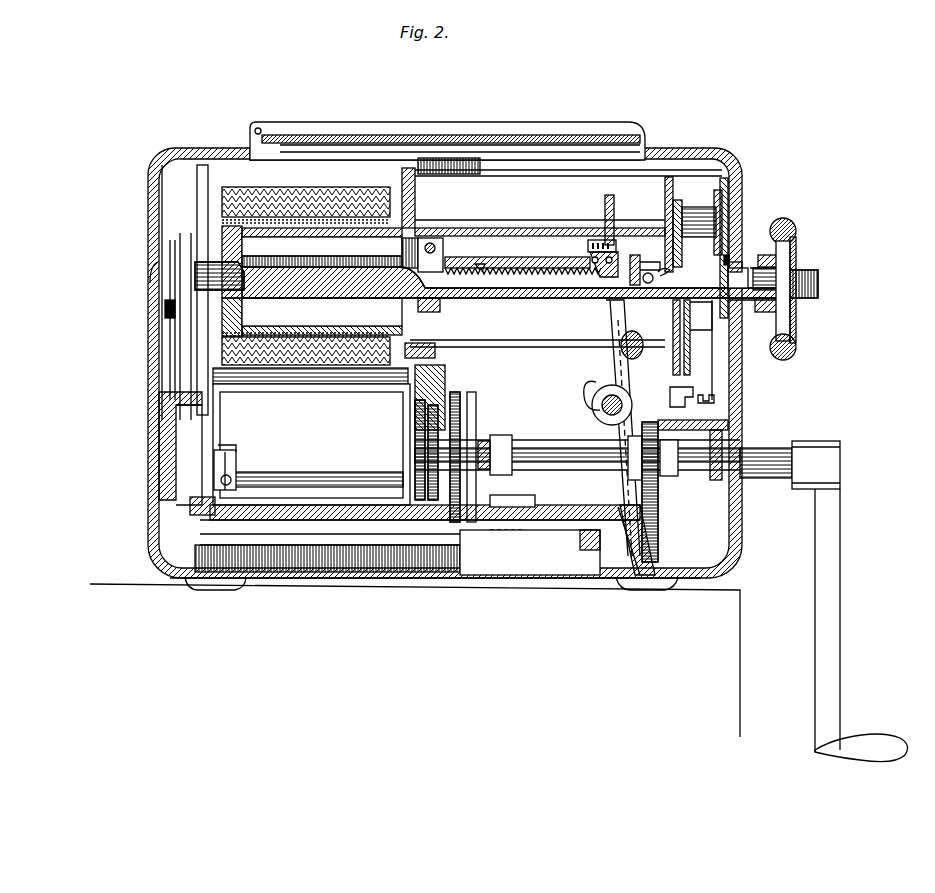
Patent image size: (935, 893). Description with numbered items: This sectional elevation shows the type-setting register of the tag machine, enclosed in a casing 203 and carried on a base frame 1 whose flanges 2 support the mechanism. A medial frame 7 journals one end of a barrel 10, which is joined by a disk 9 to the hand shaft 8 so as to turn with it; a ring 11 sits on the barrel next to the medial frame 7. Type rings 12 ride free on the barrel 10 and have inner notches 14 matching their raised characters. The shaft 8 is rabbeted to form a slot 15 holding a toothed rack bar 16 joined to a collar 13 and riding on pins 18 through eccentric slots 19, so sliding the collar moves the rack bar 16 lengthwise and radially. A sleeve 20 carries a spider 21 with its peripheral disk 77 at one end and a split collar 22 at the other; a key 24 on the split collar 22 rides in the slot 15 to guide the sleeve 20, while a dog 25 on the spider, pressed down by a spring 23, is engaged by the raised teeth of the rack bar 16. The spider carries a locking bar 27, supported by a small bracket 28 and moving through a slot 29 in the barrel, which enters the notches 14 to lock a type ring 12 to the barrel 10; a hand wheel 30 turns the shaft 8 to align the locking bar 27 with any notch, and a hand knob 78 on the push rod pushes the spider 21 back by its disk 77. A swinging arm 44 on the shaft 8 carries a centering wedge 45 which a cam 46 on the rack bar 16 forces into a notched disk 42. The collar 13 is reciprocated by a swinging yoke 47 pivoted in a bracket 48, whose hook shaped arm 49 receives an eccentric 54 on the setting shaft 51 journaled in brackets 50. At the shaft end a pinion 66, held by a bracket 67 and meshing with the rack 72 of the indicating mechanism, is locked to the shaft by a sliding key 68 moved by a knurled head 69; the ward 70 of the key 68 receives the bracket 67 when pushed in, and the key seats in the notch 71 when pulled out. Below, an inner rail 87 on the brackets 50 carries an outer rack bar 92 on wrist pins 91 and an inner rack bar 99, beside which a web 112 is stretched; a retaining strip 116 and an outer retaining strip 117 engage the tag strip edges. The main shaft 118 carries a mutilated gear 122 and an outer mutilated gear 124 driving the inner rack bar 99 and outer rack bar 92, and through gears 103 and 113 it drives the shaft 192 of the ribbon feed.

The base frame 1 is at (726, 535).
The flanges 2 is at (722, 424).
The medial frame 7 is at (402, 176).
The hand shaft 8 is at (205, 272).
The disk 9 is at (208, 185).
The barrel 10 is at (322, 252).
The ring 11 is at (418, 222).
The type rings 12 is at (276, 195).
The collar 13 is at (642, 265).
The notches 14 is at (316, 222).
The slot 15 is at (429, 265).
The toothed rack bar 16 is at (516, 282).
The pins 18 is at (714, 280).
The eccentric slots 19 is at (482, 272).
The sleeve 20 is at (504, 262).
The spider 21 is at (601, 211).
The split collar 22 is at (402, 304).
The spring 23 is at (588, 246).
The key 24 is at (445, 254).
The dog 25 is at (616, 262).
The locking bar 27 is at (490, 230).
The bracket 28 is at (418, 236).
The slot 29 is at (362, 225).
The hand wheel 30 is at (783, 220).
The notched disk 42 is at (688, 340).
The swinging arm 44 is at (690, 225).
The centering wedge 45 is at (728, 387).
The cam 46 is at (735, 215).
The swinging yoke 47 is at (683, 358).
The bracket 48 is at (628, 428).
The hook shaped arm 49 is at (592, 403).
The brackets 50 is at (620, 490).
The setting shaft 51 is at (582, 396).
The eccentrics 54 is at (600, 414).
The pinion 66 is at (732, 322).
The bracket 67 is at (729, 362).
The sliding key 68 is at (790, 280).
The knurled head 69 is at (818, 284).
The ward 70 is at (732, 265).
The notch 71 is at (759, 283).
The rack 72 is at (735, 190).
The peripheral disk 77 is at (615, 205).
The hand knob 78 is at (448, 304).
The inner rail 87 is at (455, 392).
The wrist pins 91 is at (730, 258).
The outer rack bar 92 is at (428, 420).
The inner rack bar 99 is at (415, 400).
The gear 103 is at (660, 470).
The web 112 is at (311, 436).
The gear 113 is at (650, 540).
The retaining strip 116 is at (436, 350).
The outer retaining strip 117 is at (215, 352).
The main shaft 118 is at (678, 482).
The mutilated gear 122 is at (440, 445).
The outer mutilated gear 124 is at (440, 460).
The shaft 192 is at (508, 470).
The casing 203 is at (150, 283).